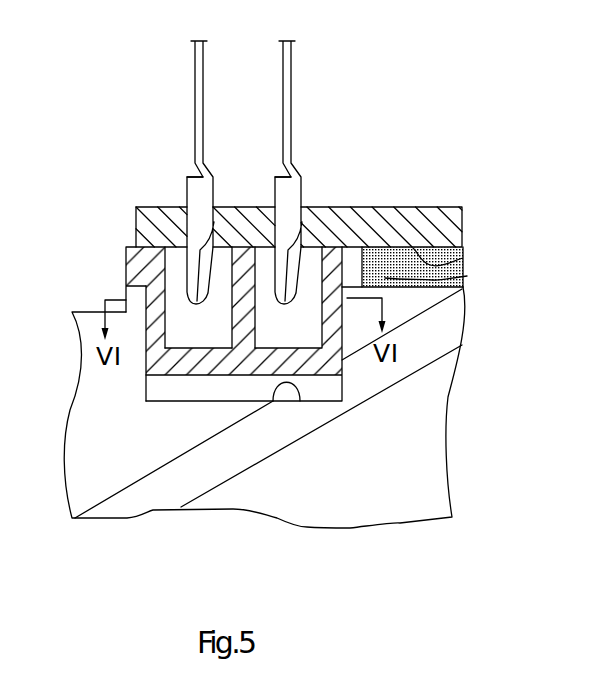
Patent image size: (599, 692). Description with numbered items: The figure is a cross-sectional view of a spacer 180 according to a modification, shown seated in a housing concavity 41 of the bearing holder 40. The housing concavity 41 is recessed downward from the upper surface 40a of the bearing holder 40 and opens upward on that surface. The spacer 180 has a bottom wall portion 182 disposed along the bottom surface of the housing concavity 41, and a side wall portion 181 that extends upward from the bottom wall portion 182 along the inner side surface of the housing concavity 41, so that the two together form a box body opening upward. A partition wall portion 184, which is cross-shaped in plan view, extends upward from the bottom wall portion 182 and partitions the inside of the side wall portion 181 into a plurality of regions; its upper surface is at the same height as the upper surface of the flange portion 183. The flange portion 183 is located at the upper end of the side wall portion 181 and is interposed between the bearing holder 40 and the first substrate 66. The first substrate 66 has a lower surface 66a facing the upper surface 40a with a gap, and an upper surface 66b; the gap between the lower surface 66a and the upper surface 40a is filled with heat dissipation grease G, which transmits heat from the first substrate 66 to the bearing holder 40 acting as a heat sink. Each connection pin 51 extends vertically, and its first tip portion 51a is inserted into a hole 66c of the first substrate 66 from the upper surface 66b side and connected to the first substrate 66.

The bearing holder 40 is at (297, 436).
The upper surface 40a is at (442, 290).
The housing concavity 41 is at (300, 401).
The connection pin 51 is at (268, 161).
The first tip portion 51a is at (298, 207).
The first substrate 66 is at (333, 234).
The lower surface 66a is at (463, 257).
The upper surface 66b is at (394, 207).
The hole 66c is at (287, 306).
The spacer 180 is at (182, 384).
The side wall portion 181 is at (146, 306).
The bottom wall portion 182 is at (193, 368).
The flange portion 183 is at (126, 262).
The partition wall portion 184 is at (243, 312).
The heat dissipation grease G is at (467, 276).